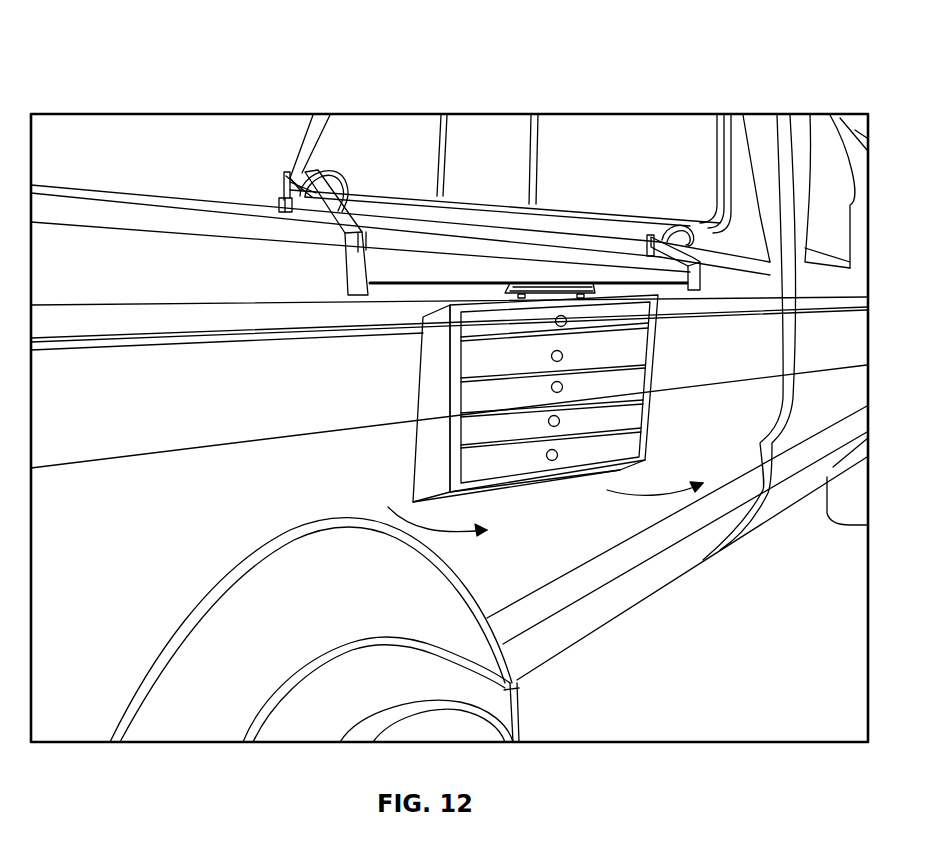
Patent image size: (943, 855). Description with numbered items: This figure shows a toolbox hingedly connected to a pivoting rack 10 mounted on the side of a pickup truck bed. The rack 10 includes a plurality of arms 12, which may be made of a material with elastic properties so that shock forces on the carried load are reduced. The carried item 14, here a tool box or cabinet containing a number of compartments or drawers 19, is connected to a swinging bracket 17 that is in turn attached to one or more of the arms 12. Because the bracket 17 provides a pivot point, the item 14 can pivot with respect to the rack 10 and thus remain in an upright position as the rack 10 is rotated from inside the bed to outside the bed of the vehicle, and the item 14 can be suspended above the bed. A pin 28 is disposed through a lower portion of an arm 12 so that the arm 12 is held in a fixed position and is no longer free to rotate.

The rack 10 is at (326, 46).
The arms 12 is at (352, 209).
The item 14 is at (423, 462).
The swinging bracket 17 is at (557, 284).
The drawers 19 is at (627, 444).
The pin 28 is at (318, 166).